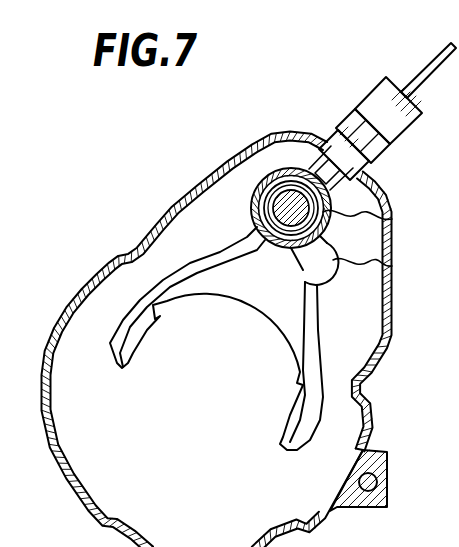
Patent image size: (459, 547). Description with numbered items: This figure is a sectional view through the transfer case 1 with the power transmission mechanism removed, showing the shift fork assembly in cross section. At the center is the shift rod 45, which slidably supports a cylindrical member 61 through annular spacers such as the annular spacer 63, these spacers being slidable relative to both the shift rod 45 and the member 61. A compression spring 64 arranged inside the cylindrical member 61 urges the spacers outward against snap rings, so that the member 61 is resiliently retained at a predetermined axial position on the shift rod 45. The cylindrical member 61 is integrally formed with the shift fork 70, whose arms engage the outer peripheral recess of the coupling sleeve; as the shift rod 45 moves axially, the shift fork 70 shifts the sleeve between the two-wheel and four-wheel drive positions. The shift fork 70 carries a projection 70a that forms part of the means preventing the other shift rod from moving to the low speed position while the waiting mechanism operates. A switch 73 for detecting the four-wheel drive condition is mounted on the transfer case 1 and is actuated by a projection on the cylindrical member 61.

The transfer case 1 is at (173, 208).
The shift fork 70 is at (152, 300).
The projection 70a is at (392, 267).
The cylindrical member 61 is at (392, 220).
The annular spacer 63 is at (263, 170).
The compression spring 64 is at (273, 197).
The shift rod 45 is at (293, 197).
The switch 73 is at (417, 117).